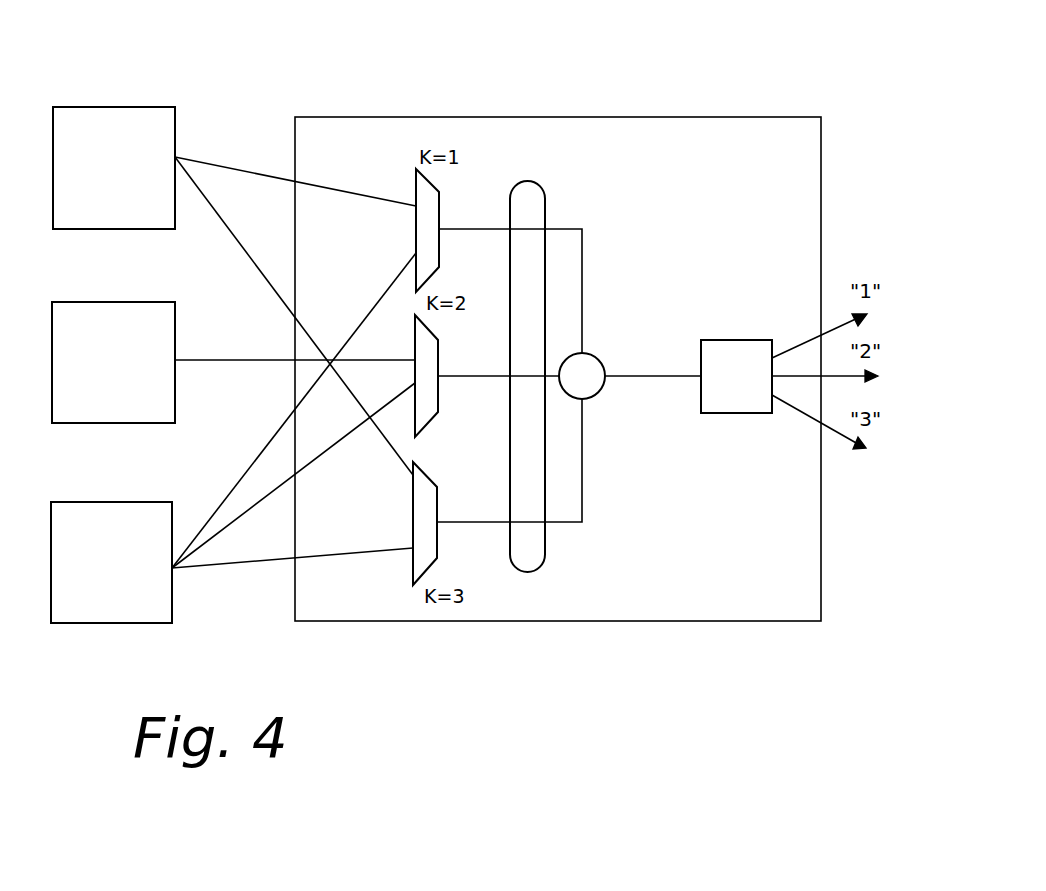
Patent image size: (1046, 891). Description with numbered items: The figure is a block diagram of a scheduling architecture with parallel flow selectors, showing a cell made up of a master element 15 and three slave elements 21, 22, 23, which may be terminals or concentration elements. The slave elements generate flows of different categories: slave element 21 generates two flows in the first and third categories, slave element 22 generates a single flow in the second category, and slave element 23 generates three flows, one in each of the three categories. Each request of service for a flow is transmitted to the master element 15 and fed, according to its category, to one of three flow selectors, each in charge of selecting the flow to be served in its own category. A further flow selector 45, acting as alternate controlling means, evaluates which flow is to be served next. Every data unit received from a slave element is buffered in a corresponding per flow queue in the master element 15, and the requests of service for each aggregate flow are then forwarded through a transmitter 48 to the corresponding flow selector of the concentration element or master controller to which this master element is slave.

The master element 15 is at (600, 117).
The slave element 21 is at (125, 120).
The slave element 22 is at (145, 330).
The slave element 23 is at (113, 518).
The further flow selector 45 is at (582, 522).
The transmitter 48 is at (724, 348).